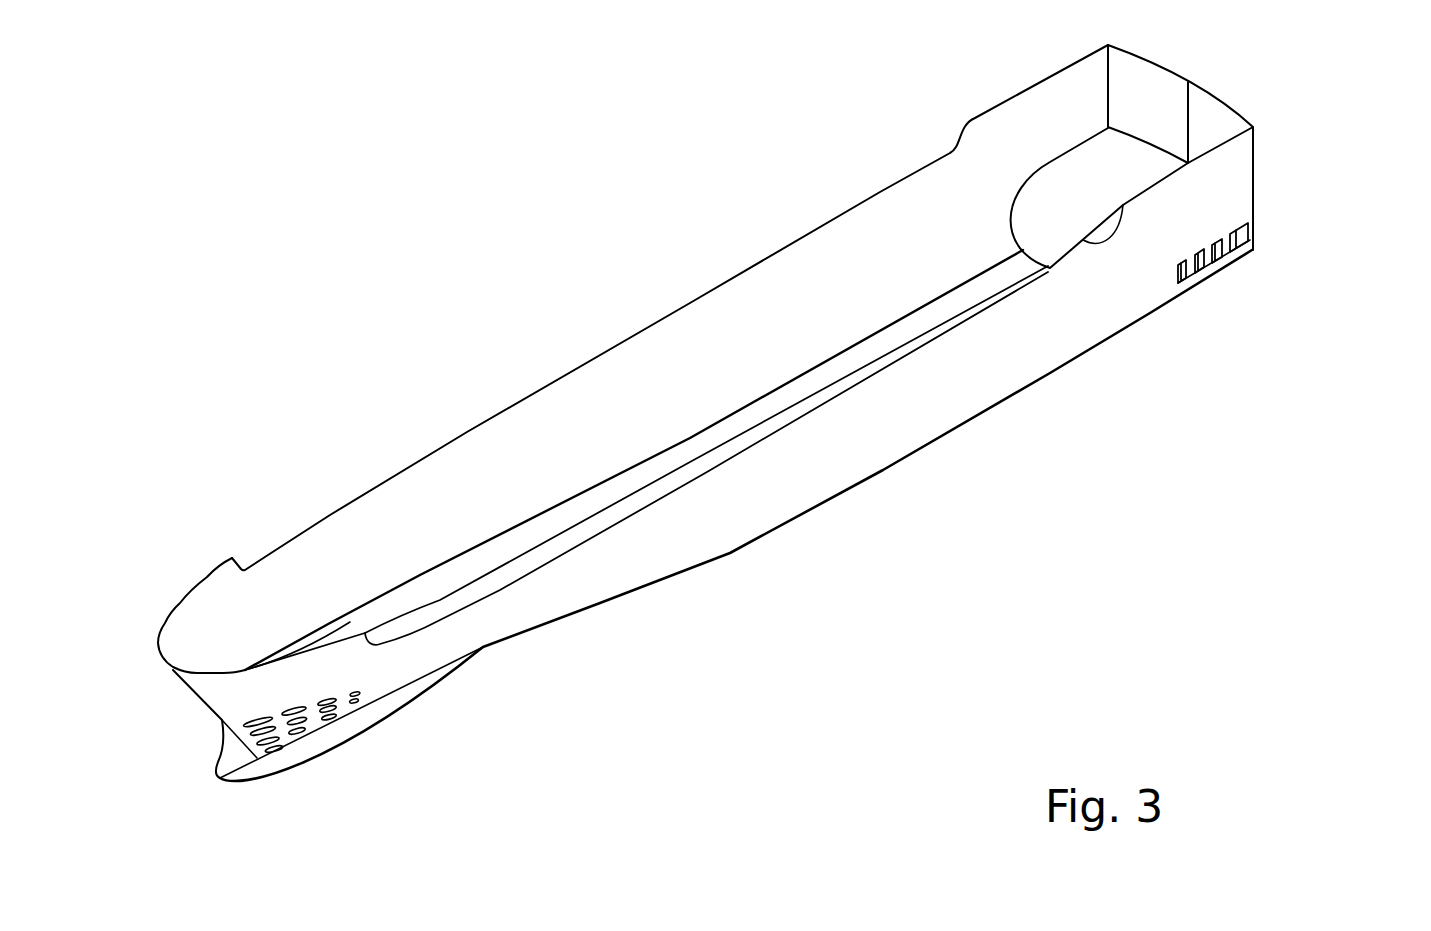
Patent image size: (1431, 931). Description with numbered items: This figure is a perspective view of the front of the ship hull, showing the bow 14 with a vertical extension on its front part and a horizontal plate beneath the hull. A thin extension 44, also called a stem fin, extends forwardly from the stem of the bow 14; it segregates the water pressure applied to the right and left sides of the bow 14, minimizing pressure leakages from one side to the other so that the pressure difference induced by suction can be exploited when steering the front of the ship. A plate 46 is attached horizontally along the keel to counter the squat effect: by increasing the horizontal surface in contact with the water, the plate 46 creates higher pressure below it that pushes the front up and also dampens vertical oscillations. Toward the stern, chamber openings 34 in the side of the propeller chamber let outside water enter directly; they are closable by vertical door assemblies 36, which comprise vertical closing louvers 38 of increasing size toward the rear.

The bow 14 is at (172, 588).
The chamber openings 34 is at (1227, 232).
The vertical door assemblies 36 is at (1240, 240).
The vertical closing louvers 38 is at (1194, 270).
The thin extension 44 is at (237, 760).
The plate 46 is at (283, 762).